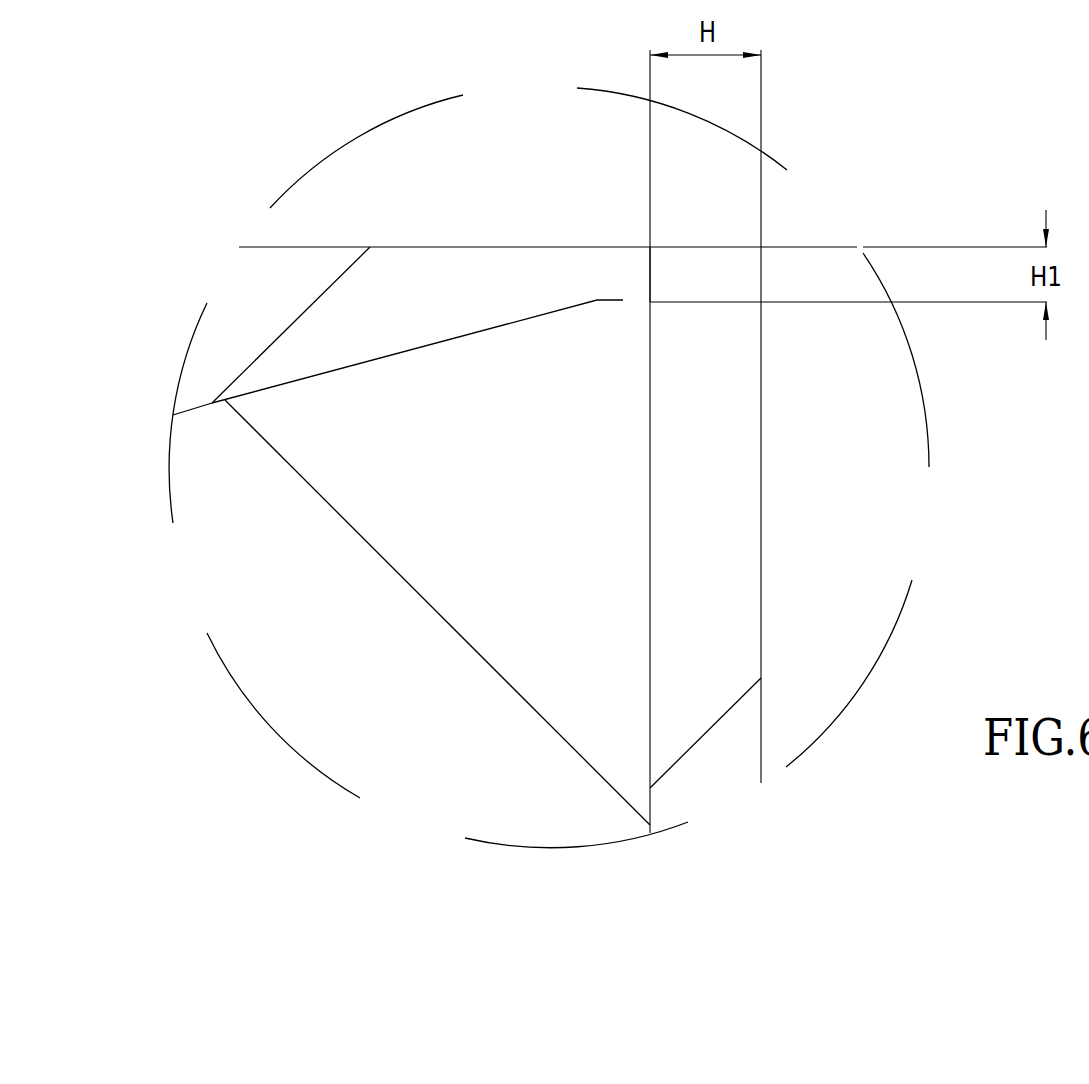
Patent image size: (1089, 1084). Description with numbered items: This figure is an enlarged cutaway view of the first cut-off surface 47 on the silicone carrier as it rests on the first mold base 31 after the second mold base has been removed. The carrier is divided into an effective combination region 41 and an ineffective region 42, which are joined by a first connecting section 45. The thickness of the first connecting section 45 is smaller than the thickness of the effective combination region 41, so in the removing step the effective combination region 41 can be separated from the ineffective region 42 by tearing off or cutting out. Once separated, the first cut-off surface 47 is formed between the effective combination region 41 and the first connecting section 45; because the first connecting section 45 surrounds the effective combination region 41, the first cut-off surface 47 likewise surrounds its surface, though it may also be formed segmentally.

The first mold base 31 is at (272, 673).
The effective combination region 41 is at (732, 445).
The ineffective region 42 is at (315, 263).
The first connecting section 45 is at (623, 300).
The first cut-off surface 47 is at (650, 273).